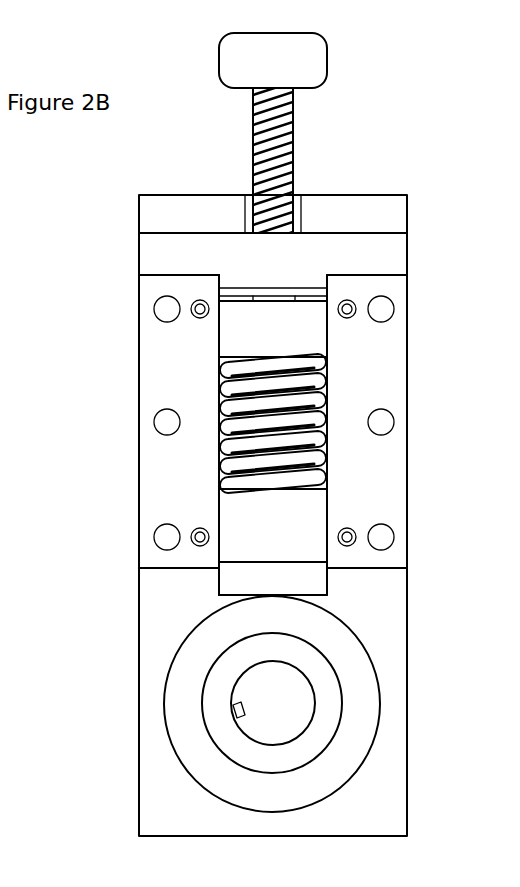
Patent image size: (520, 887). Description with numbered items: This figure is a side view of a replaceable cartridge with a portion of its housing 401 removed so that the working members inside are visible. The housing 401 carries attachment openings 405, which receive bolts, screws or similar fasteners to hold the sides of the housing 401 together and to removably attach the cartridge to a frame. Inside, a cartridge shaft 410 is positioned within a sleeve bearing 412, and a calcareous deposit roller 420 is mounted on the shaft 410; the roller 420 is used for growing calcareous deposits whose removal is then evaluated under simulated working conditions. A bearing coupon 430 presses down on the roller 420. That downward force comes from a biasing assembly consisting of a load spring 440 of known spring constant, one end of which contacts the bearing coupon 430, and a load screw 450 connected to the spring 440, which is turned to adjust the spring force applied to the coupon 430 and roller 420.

The housing 401 is at (418, 262).
The attachment openings 405 is at (388, 426).
The cartridge shaft 410 is at (245, 695).
The sleeve bearing 412 is at (327, 728).
The calcareous deposit roller 420 is at (368, 687).
The bearing coupon 430 is at (322, 580).
The load spring 440 is at (318, 398).
The load screw 450 is at (295, 148).